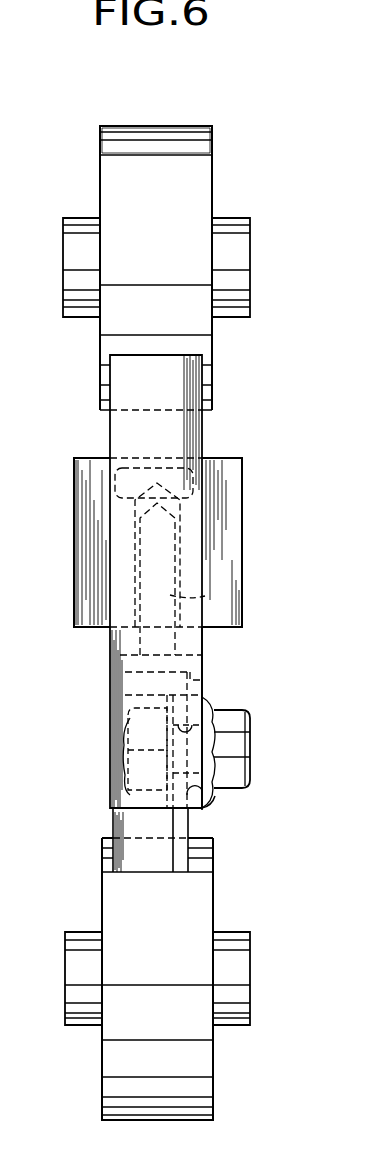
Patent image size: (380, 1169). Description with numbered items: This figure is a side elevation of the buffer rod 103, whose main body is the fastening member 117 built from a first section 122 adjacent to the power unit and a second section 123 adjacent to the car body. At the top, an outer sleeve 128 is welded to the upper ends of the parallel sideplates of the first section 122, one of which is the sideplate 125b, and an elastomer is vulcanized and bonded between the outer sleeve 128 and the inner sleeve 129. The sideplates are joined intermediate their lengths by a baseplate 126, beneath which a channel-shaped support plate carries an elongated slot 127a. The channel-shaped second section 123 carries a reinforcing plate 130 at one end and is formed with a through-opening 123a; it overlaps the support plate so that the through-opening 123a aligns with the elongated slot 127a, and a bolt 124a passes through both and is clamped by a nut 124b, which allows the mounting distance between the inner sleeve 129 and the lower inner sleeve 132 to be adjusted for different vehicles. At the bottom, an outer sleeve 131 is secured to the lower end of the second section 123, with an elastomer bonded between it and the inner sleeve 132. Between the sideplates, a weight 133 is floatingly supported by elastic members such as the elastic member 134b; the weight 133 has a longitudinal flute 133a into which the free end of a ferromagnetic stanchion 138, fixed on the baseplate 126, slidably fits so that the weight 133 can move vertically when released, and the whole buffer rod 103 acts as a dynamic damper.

The buffer rod 103 is at (172, 125).
The outer sleeve 128 is at (204, 149).
The inner sleeve 129 is at (225, 222).
The first section 122 is at (205, 432).
The weight 133 is at (228, 516).
The elastic member 134b is at (196, 482).
The longitudinal flute 133a is at (185, 507).
The stanchion 138 is at (205, 597).
The sideplate 125b is at (120, 578).
The fastening member 117 is at (204, 645).
The baseplate 126 is at (115, 665).
The reinforcing plate 130 is at (115, 690).
The nut 124b is at (130, 770).
The through-opening 123a is at (215, 703).
The bolt 124a is at (232, 746).
The elongated slot 127a is at (215, 800).
The second section 123 is at (207, 835).
The outer sleeve 131 is at (200, 1082).
The inner sleeve 132 is at (230, 935).